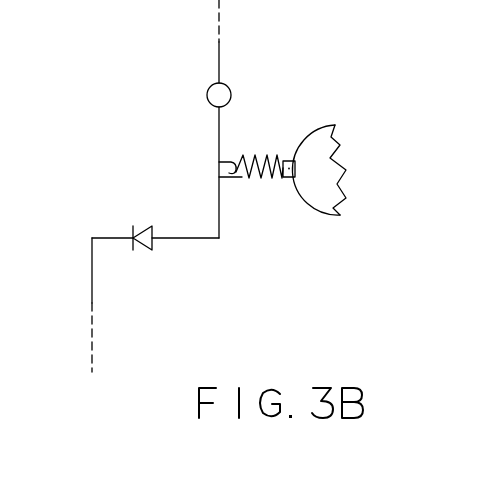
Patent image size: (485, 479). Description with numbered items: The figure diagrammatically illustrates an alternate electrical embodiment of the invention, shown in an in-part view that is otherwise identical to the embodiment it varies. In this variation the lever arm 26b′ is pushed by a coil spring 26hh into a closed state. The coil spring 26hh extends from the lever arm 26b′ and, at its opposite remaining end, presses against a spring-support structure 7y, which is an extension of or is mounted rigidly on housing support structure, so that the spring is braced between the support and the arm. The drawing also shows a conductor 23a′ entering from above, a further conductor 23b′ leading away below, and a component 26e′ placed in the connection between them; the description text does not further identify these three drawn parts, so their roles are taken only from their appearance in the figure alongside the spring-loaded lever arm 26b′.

The upper conductor 23a′ is at (219, 58).
The lever arm 26b′ is at (219, 128).
The coil spring 26hh is at (259, 157).
The spring-support structure 7y is at (318, 181).
The diode 26e′ is at (128, 224).
The lower conductor 23b′ is at (92, 283).